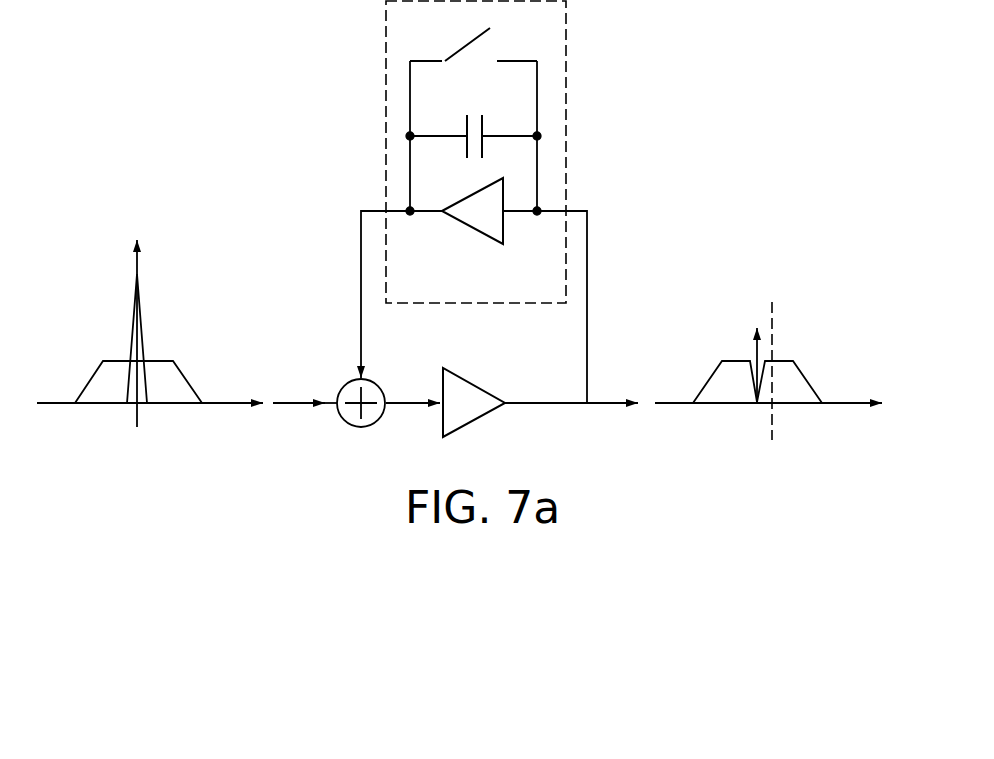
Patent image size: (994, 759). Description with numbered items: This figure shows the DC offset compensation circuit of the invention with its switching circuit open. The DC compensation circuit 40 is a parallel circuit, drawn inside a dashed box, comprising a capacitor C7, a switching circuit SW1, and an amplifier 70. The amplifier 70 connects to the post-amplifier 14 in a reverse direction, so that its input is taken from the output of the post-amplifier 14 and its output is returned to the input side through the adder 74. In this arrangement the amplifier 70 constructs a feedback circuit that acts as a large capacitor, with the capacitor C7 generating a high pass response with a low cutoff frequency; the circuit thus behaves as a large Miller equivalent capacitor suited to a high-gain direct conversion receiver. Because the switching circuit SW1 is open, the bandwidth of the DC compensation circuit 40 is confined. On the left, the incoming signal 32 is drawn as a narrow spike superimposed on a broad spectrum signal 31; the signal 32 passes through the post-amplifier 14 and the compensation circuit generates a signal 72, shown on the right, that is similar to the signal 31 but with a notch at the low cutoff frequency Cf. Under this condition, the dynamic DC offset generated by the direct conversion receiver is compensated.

The signal 31 is at (182, 375).
The signal 32 is at (145, 334).
The adder 74 is at (382, 382).
The post-amplifier 14 is at (473, 382).
The DC compensation circuit 40 is at (518, 152).
The switching circuit SW1 is at (482, 42).
The capacitor C7 is at (473, 122).
The amplifier 70 is at (477, 228).
The signal 72 is at (868, 382).